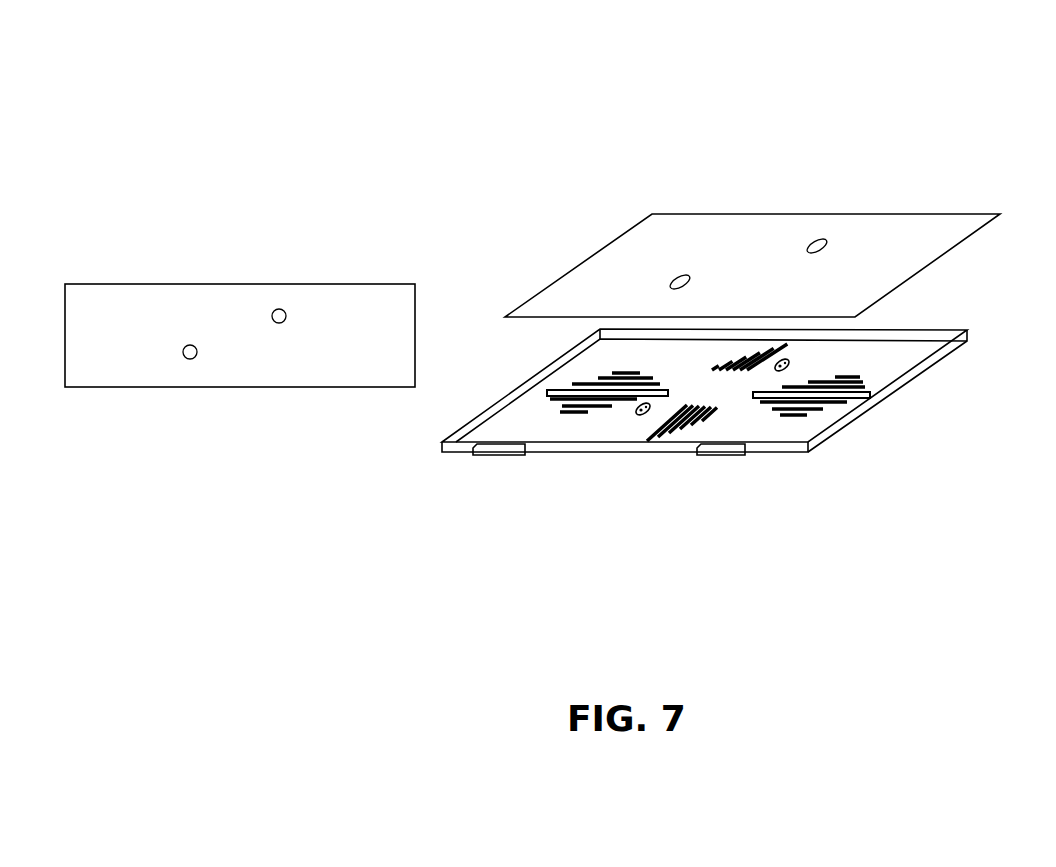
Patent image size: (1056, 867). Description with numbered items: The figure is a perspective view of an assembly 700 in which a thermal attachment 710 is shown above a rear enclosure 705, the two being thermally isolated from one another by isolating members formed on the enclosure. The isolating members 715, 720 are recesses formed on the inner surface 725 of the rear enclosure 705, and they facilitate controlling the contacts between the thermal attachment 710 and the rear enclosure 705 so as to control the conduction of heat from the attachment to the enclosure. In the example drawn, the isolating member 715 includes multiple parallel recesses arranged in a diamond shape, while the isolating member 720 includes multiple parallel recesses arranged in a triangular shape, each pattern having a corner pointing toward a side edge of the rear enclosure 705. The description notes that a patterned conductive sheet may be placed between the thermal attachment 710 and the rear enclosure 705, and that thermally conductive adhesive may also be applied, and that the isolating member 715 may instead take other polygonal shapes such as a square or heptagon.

The tray assembly 700 is at (306, 92).
The rear enclosure 705 is at (920, 328).
The thermal attachment 710 is at (347, 296).
The isolating member 715 is at (895, 380).
The isolating member 720 is at (740, 424).
The inner surface 725 is at (902, 362).